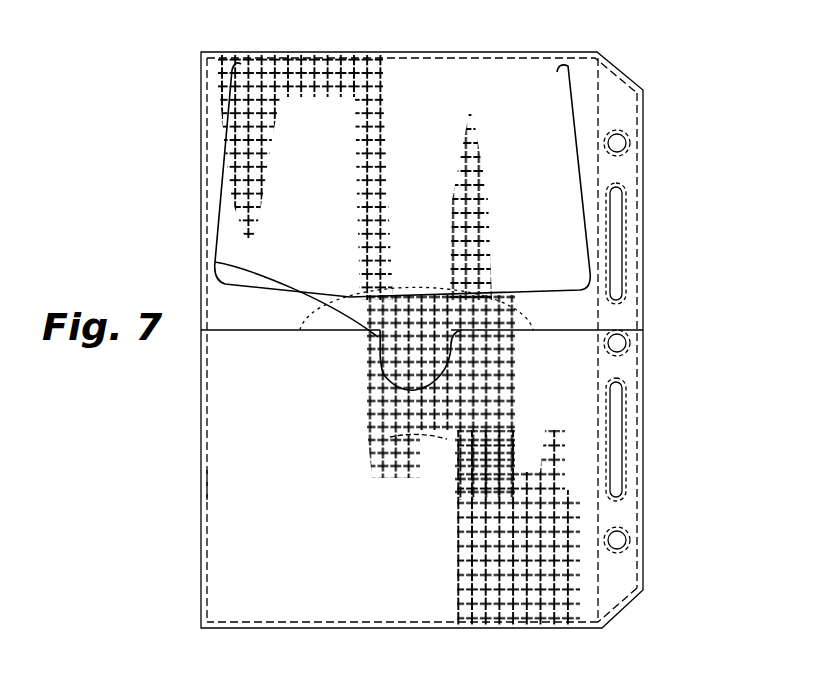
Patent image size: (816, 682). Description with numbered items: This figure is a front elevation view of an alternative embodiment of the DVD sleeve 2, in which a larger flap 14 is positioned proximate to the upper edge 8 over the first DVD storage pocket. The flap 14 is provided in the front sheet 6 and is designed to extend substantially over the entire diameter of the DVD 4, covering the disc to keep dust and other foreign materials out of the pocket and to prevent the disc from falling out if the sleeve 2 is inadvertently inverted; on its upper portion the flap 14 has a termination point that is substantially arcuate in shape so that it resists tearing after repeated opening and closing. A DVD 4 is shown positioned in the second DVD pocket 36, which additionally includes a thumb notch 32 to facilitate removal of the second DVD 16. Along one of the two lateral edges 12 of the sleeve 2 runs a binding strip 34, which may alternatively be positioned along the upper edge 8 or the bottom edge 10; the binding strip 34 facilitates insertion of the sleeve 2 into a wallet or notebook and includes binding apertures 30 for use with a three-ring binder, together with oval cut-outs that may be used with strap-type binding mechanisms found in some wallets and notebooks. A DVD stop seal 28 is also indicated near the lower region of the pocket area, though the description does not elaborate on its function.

The DVD sleeve 2 is at (517, 40).
The DVD 4 is at (512, 325).
The front sheet 6 is at (217, 388).
The upper edge 8 is at (370, 52).
The bottom edge 10 is at (288, 628).
The lateral edge 12 is at (643, 388).
The flap 14 is at (568, 160).
The second DVD 16 is at (350, 322).
The DVD stop seal 28 is at (430, 448).
The binding aperture 30 is at (622, 540).
The thumb notch 32 is at (455, 370).
The binding strip 34 is at (630, 474).
The second DVD pocket 36 is at (215, 262).